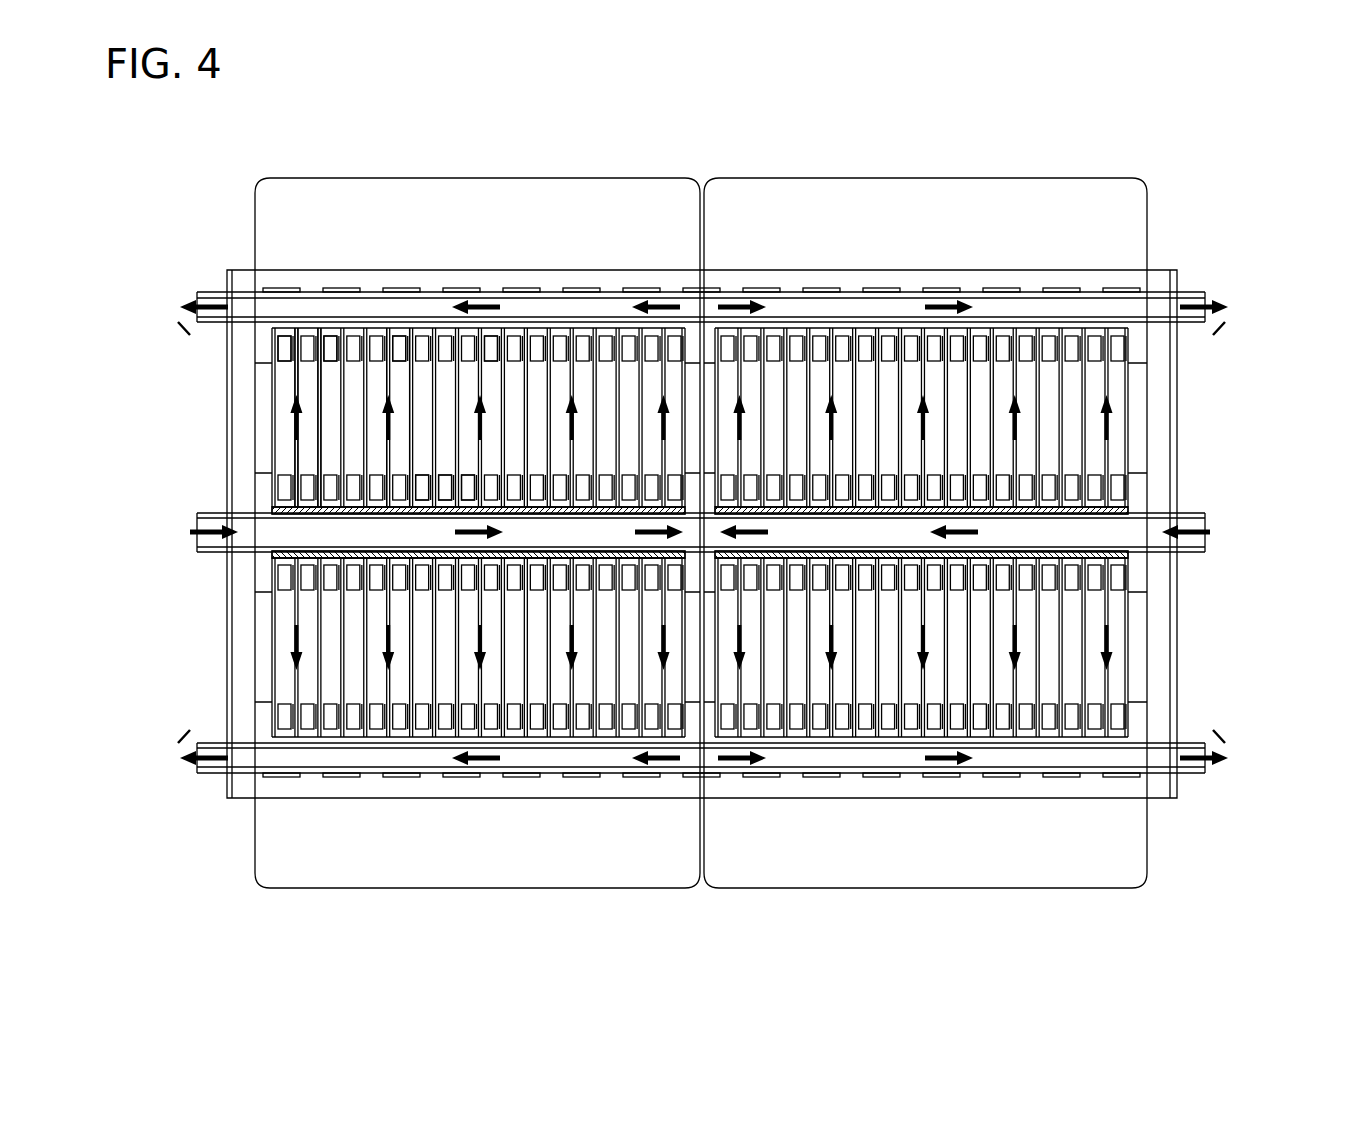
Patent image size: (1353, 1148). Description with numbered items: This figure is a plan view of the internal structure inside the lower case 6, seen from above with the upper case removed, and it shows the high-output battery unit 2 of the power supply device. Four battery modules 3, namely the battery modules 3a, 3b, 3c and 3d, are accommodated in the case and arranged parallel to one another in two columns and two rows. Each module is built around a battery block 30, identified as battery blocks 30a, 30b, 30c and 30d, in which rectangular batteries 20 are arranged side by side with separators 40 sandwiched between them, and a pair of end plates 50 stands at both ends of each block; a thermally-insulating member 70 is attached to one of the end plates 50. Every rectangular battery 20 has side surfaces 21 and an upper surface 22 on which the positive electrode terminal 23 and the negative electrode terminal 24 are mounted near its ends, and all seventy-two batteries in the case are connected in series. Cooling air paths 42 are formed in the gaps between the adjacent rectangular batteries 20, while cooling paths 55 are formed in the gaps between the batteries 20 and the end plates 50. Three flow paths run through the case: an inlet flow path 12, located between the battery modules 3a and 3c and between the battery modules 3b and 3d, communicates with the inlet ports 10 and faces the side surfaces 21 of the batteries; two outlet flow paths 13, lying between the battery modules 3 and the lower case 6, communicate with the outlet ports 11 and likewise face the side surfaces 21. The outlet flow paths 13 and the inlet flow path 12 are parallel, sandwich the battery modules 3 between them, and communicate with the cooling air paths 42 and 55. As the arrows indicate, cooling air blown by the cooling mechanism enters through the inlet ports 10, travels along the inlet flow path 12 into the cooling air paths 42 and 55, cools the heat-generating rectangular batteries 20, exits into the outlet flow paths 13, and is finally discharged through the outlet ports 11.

The battery unit 2 is at (192, 266).
The lower case 6 is at (240, 270).
The battery module 3 is at (701, 542).
The battery module 3a is at (478, 178).
The battery module 3b is at (945, 178).
The battery module 3c is at (428, 888).
The battery module 3d is at (955, 888).
The battery block 30 is at (700, 537).
The battery block 30a is at (519, 316).
The battery block 30b is at (843, 316).
The battery block 30c is at (515, 754).
The battery block 30d is at (848, 754).
The inlet port 10 is at (178, 530).
The outlet port 11 is at (185, 320).
The inlet flow path 12 is at (255, 539).
The outlet flow path 13 is at (240, 314).
The rectangular battery 20 is at (298, 383).
The side surface 21 is at (398, 316).
The upper surface 22 is at (420, 480).
The positive electrode terminal 23 is at (487, 345).
The negative electrode terminal 24 is at (400, 343).
The separator 40 is at (322, 340).
The cooling air path 42 is at (330, 350).
The end plate 50 is at (270, 337).
The cooling path 55 is at (290, 350).
The thermally-insulating member 70 is at (287, 508).